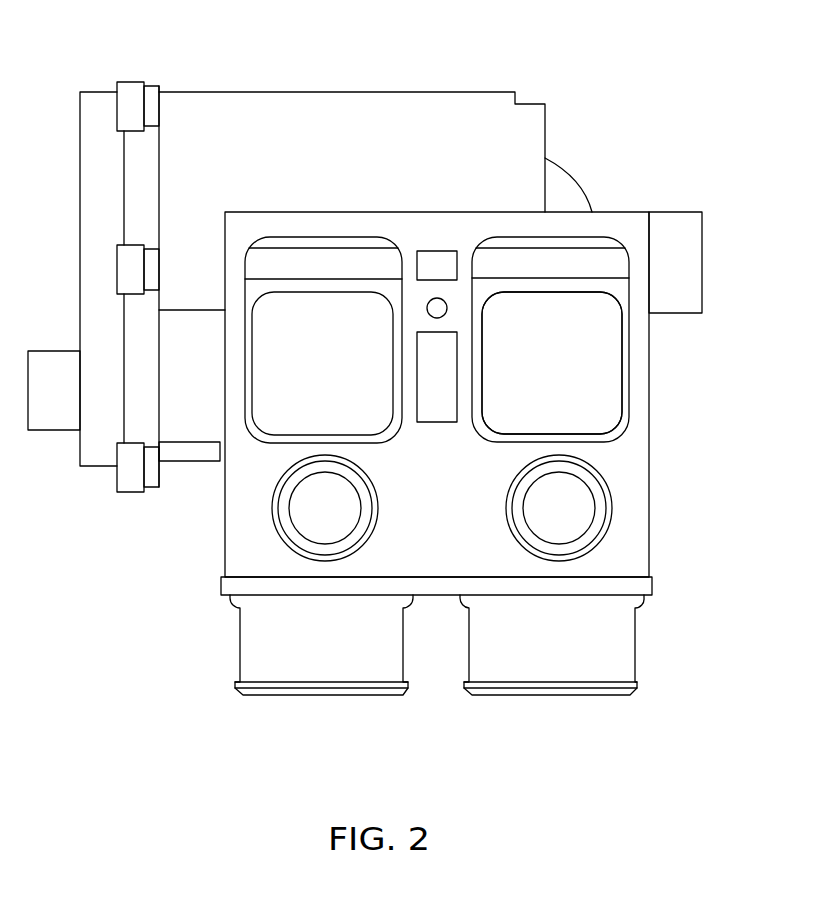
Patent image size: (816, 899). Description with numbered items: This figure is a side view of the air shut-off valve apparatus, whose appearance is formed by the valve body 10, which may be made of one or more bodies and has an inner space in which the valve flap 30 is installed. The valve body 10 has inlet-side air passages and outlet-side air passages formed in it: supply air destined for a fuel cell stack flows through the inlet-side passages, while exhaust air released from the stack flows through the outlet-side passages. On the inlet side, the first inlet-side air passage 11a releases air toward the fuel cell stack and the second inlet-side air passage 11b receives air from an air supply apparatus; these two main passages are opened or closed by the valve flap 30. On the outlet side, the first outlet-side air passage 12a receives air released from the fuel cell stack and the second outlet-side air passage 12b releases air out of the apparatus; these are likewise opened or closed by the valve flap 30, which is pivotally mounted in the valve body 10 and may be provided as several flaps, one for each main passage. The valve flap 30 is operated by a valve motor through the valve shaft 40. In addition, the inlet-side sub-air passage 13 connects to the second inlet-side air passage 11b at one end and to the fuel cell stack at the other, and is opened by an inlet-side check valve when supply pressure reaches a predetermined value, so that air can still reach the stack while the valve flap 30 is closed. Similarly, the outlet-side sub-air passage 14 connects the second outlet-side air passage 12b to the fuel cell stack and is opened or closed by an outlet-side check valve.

The valve body 10 is at (372, 358).
The valve shaft 40 is at (599, 263).
The valve flap 30 is at (609, 333).
The first inlet-side air passage 11a is at (556, 366).
The first outlet-side air passage 12a is at (317, 369).
The inlet-side sub-air passage 13 is at (562, 509).
The outlet-side sub-air passage 14 is at (311, 509).
The second inlet-side air passage 11b is at (613, 652).
The second outlet-side air passage 12b is at (258, 651).